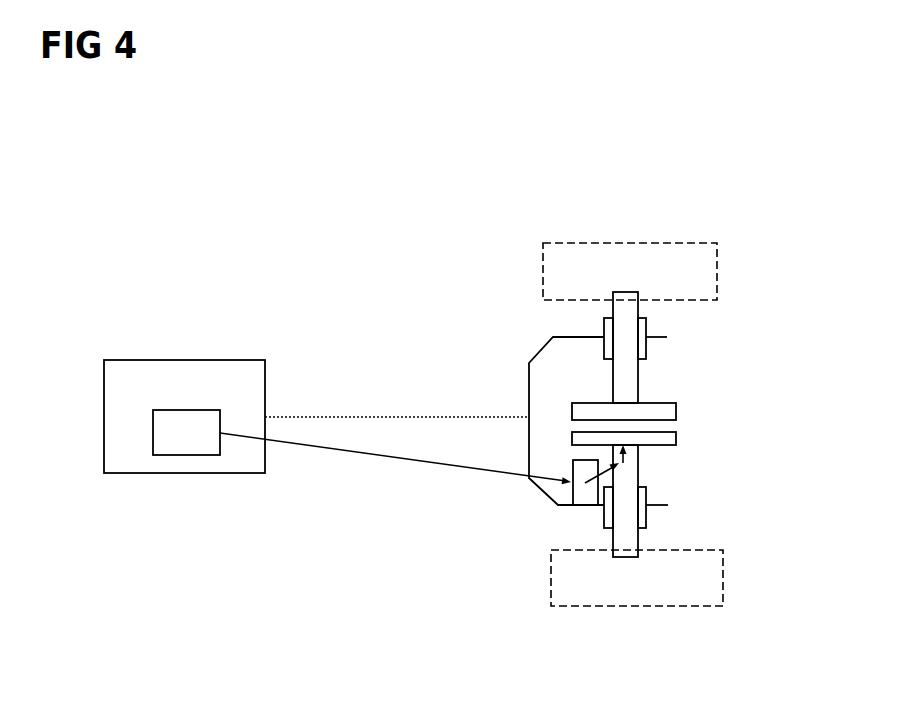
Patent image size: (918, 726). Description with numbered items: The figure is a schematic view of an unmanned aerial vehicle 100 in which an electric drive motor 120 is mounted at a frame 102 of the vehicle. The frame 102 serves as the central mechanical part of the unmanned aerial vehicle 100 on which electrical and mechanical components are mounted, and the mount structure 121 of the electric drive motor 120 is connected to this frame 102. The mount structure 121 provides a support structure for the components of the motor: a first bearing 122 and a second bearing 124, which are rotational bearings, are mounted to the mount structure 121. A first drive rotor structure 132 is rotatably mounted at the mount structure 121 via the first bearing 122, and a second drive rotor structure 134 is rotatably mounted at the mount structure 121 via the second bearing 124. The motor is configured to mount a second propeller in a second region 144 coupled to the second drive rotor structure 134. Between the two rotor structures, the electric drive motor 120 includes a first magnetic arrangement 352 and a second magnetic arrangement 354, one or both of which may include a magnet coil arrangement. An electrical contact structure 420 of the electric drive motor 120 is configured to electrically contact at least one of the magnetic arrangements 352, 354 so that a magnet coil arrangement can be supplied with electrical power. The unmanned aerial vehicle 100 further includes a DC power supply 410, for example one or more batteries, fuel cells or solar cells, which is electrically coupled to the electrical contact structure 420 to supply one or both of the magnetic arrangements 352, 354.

The unmanned aerial vehicle 100 is at (386, 118).
The frame 102 is at (221, 370).
The electric drive motor 120 is at (611, 193).
The mount structure 121 is at (494, 396).
The first bearing 122 is at (651, 347).
The second bearing 124 is at (652, 521).
The first drive rotor structure 132 is at (638, 373).
The second drive rotor structure 134 is at (638, 473).
The second region 144 is at (723, 605).
The first magnetic arrangement 352 is at (681, 409).
The second magnetic arrangement 354 is at (681, 439).
The DC power supply 410 is at (184, 445).
The electrical contact structure 420 is at (606, 458).